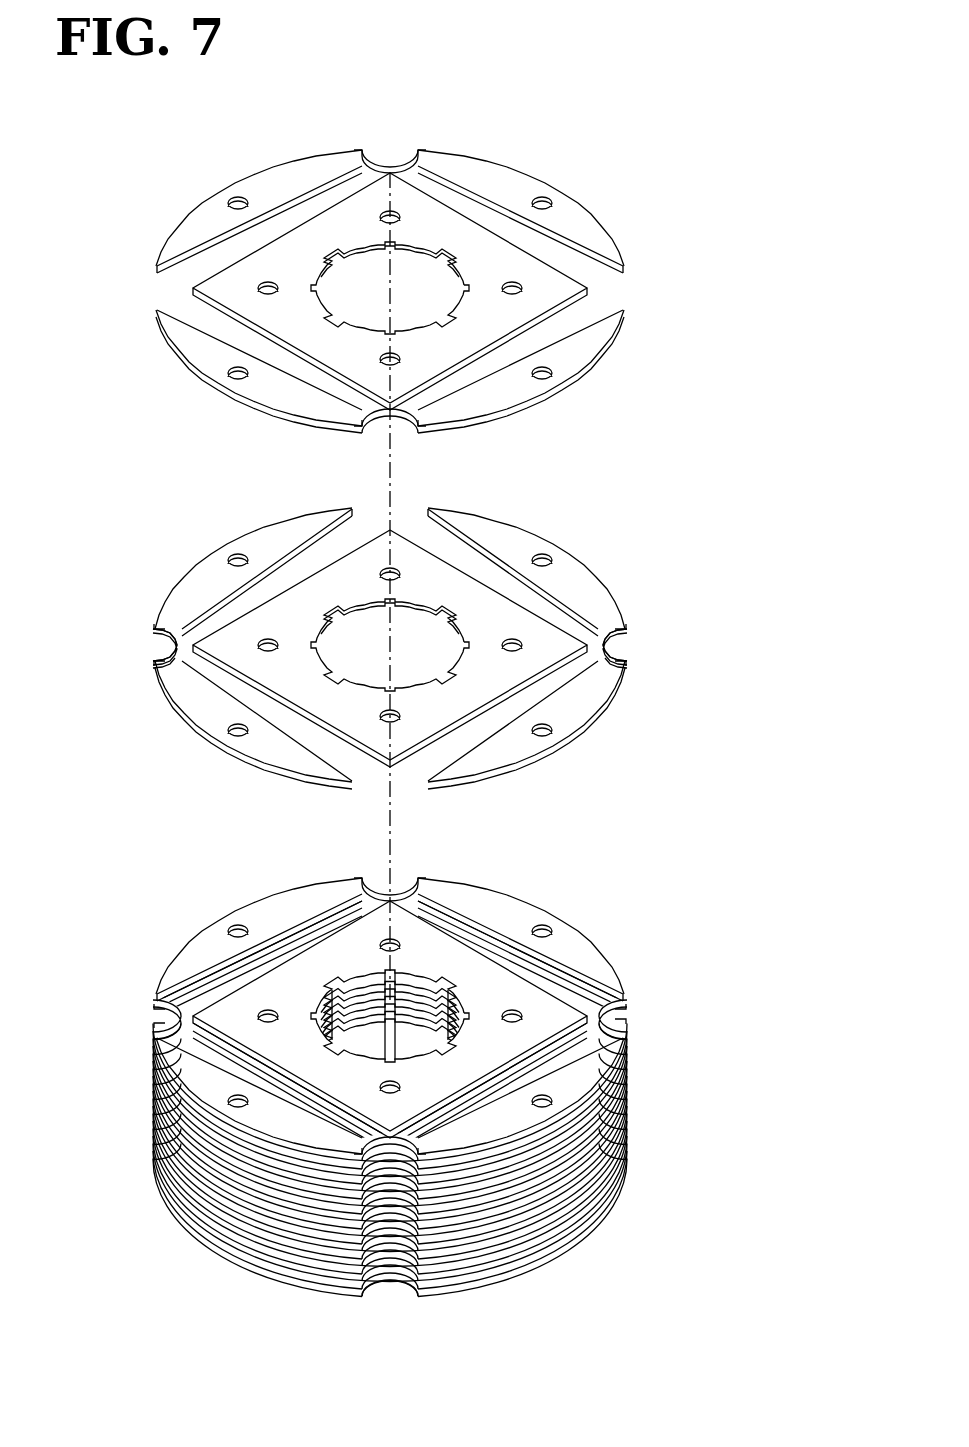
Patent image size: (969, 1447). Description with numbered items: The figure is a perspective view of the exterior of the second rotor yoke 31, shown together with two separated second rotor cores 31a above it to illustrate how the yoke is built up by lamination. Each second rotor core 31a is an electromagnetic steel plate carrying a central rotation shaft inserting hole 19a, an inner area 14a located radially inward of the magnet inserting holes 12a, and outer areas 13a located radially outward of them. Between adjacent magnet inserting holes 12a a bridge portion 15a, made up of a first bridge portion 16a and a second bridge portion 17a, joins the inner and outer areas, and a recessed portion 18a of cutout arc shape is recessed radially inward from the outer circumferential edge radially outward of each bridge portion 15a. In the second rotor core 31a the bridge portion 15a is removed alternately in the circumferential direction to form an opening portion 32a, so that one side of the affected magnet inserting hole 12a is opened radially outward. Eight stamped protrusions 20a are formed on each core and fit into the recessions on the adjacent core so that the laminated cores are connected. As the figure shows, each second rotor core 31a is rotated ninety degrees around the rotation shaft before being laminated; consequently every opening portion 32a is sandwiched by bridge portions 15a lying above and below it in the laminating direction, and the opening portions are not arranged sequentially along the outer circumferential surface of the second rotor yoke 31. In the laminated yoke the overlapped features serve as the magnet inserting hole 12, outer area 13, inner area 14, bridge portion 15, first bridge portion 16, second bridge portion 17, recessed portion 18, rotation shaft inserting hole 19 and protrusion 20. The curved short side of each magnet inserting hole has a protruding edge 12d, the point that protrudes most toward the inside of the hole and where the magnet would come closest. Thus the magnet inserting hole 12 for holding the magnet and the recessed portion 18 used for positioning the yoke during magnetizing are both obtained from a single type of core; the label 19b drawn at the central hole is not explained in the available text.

The second rotor core 31a is at (175, 185).
The second rotor yoke 31 is at (180, 1245).
The magnet inserting hole 12a is at (308, 215).
The magnet inserting hole 12 is at (222, 950).
The protruding edge 12d is at (310, 935).
The outer area 13a is at (600, 232).
The outer area 13 is at (180, 965).
The inner area 14a is at (460, 345).
The inner area 14 is at (490, 980).
The bridge portion 15a is at (478, 92).
The bridge portion 15 is at (385, 845).
The first bridge portion 16a is at (395, 163).
The first bridge portion 16 is at (378, 895).
The second bridge portion 17a is at (392, 160).
The second bridge portion 17 is at (398, 892).
The recessed portion 18a is at (385, 158).
The recessed portion 18 is at (403, 878).
The rotation shaft inserting hole 19a is at (402, 272).
The rotation shaft inserting hole 19 is at (410, 990).
The keyway recess of central hole 19b is at (330, 275).
The protrusion 20a is at (238, 197).
The protrusion 20 is at (238, 925).
The opening portion 32a is at (170, 278).